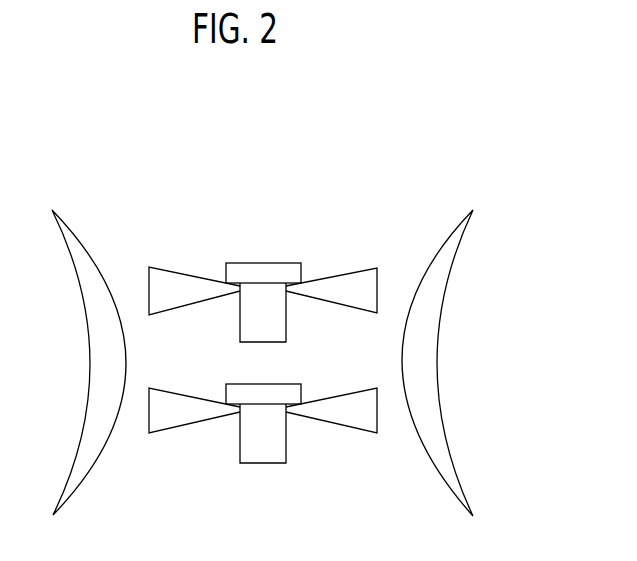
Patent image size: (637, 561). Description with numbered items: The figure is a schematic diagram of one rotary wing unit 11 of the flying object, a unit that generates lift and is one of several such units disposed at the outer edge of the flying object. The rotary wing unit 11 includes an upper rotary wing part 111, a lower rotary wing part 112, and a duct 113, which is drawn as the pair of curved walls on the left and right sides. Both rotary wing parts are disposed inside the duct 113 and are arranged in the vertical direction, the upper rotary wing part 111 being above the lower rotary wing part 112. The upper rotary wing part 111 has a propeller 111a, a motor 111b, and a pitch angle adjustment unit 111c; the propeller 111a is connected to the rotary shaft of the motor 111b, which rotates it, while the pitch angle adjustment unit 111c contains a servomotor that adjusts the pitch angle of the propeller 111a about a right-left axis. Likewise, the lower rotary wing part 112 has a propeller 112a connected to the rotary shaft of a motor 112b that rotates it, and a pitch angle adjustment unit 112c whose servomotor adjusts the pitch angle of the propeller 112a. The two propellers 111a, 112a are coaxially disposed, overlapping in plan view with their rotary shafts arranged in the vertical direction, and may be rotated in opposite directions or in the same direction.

The rotary wing unit 11 is at (409, 155).
The upper rotary wing part 111 is at (302, 242).
The propeller 111a is at (357, 282).
The motor 111b is at (275, 320).
The pitch angle adjustment unit 111c is at (255, 273).
The lower rotary wing part 112 is at (305, 462).
The propeller 112a is at (357, 423).
The motor 112b is at (250, 441).
The pitch angle adjustment unit 112c is at (255, 390).
The duct 113 is at (107, 257).